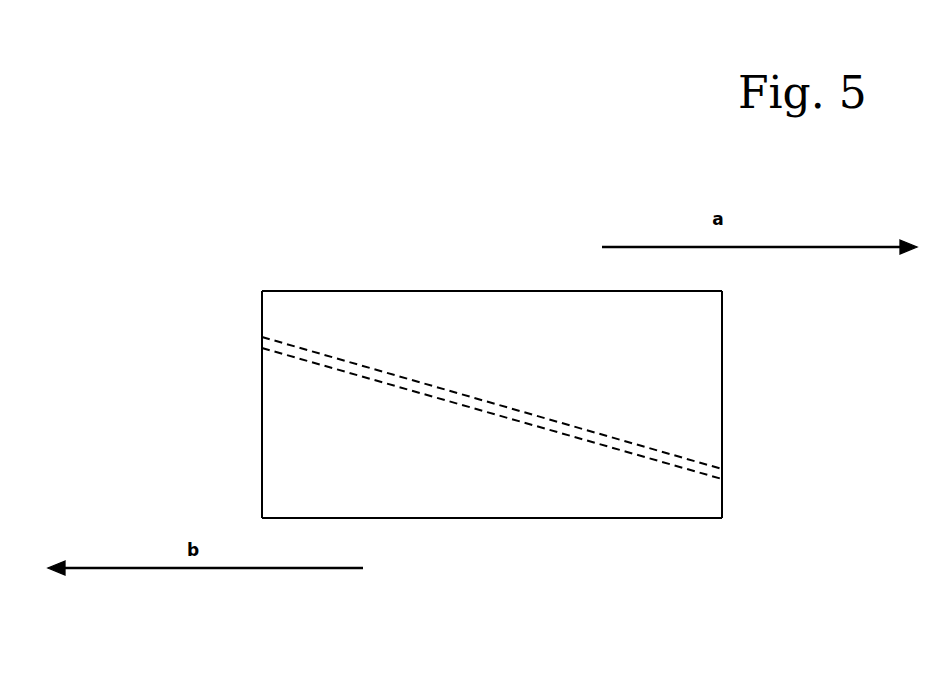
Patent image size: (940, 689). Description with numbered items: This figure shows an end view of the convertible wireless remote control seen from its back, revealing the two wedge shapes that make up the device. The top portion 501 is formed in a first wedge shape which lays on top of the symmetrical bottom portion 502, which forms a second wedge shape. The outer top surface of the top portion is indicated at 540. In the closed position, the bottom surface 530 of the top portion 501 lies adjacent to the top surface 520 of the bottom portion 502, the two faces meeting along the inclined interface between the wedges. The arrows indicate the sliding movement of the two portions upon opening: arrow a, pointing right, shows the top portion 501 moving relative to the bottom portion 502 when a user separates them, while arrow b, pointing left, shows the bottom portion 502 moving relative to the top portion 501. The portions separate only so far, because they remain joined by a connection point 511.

The top portion 501 is at (523, 338).
The bottom portion 502 is at (457, 480).
The connection point 511 is at (557, 391).
The top surface of the bottom portion 520 is at (600, 445).
The bottom surface of the top portion 530 is at (385, 373).
The top surface of the top portion 540 is at (492, 371).